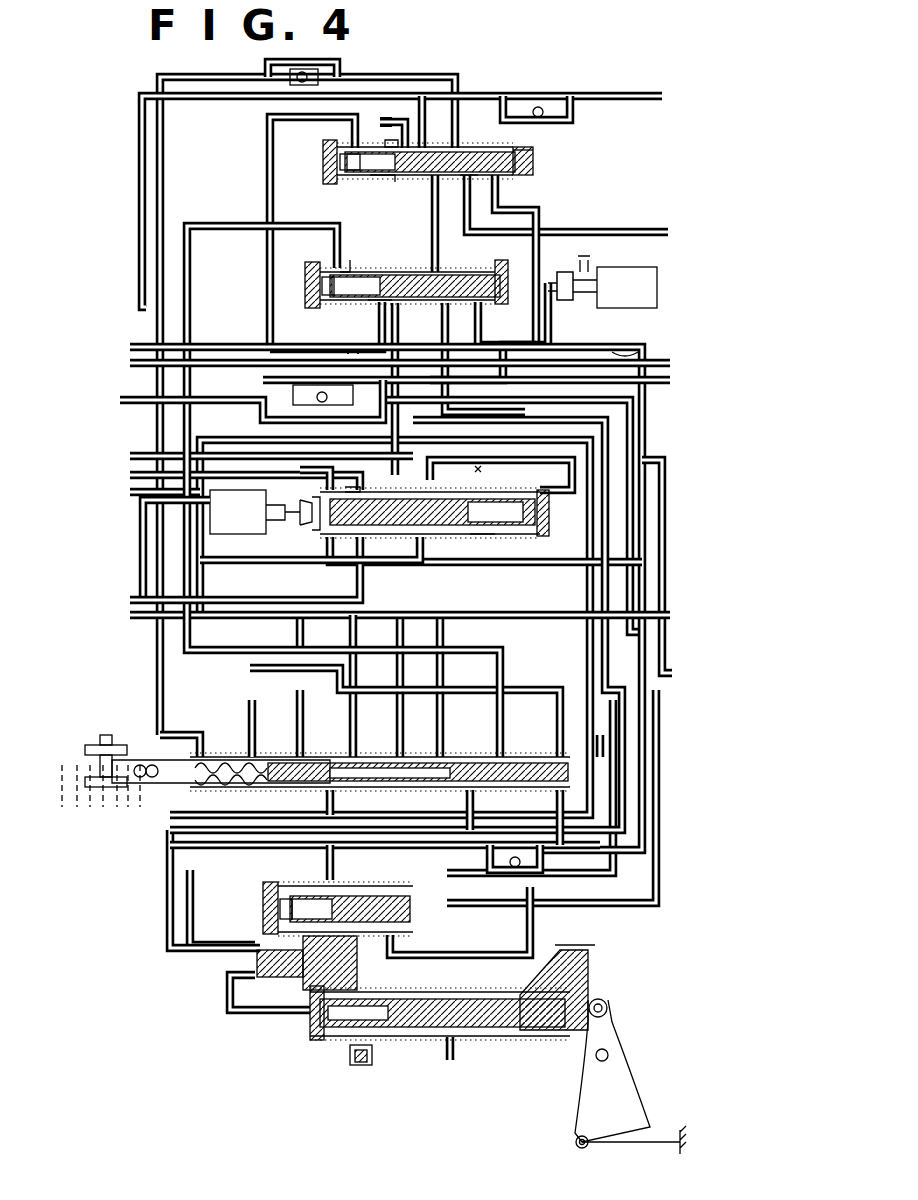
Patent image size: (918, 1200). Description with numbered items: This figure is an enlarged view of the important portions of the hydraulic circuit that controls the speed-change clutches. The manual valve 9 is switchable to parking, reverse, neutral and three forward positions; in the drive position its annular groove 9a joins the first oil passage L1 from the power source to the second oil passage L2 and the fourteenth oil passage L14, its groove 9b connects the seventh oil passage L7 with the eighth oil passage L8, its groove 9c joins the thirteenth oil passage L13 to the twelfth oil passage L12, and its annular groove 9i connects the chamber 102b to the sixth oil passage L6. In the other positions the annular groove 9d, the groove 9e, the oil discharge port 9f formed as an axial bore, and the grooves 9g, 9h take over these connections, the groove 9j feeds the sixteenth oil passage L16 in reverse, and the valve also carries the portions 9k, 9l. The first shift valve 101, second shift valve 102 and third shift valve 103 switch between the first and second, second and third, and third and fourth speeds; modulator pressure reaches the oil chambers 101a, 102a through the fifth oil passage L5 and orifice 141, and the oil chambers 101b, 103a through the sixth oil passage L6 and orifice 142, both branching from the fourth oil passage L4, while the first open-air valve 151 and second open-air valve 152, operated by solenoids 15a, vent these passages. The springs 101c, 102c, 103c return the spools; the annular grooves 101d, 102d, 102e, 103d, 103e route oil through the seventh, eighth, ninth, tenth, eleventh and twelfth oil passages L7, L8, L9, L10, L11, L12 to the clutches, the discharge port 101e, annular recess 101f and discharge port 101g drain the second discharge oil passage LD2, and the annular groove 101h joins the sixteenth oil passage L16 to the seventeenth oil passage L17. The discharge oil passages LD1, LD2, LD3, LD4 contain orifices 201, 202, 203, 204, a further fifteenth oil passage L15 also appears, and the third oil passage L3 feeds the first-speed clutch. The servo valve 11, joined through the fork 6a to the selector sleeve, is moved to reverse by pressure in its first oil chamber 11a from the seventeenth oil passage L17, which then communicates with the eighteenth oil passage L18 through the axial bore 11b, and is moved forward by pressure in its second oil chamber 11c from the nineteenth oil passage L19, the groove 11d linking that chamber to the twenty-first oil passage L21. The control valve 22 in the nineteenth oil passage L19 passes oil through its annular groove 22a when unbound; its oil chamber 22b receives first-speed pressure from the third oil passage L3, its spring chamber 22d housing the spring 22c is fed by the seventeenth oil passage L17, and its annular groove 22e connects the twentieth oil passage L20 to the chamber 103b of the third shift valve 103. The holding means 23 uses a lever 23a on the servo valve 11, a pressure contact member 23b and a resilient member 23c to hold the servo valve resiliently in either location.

The manual valve 9 is at (150, 760).
The annular groove 9a is at (360, 789).
The groove 9b is at (505, 752).
The groove 9c is at (300, 742).
The annular groove 9d is at (490, 792).
The groove 9e is at (412, 790).
The oil discharge port 9f is at (570, 772).
The groove 9g is at (418, 757).
The groove 9h is at (520, 759).
The annular groove 9i is at (545, 792).
The groove 9j is at (340, 789).
The manual valve port 9k is at (380, 757).
The manual valve port 9l is at (268, 789).
The servo valve 11 is at (485, 1042).
The first oil chamber 11a is at (312, 1037).
The axial bore 11b is at (400, 1042).
The second oil chamber 11c is at (358, 1068).
The groove 11d is at (420, 1042).
The fork 6a is at (588, 970).
The solenoid 15a is at (657, 290).
The first open-air valve 151 is at (580, 282).
The second open-air valve 152 is at (285, 524).
The control valve 22 is at (410, 912).
The annular groove 22a is at (400, 937).
The right end oil chamber 22b is at (415, 927).
The spring 22c is at (280, 910).
The spring chamber 22d is at (290, 927).
The annular groove 22e is at (320, 947).
The holding means 23 is at (628, 1084).
The lever 23a is at (585, 1102).
The pressure contact member 23b is at (578, 1140).
The resilient member 23c is at (664, 1142).
The first shift valve 101 is at (546, 498).
The right end oil chamber 101a is at (530, 540).
The left-end oil chamber 101b is at (143, 502).
The right-end spring 101c is at (560, 522).
The annular groove 101d is at (478, 537).
The oil discharge port 101e is at (472, 482).
The annular recess 101f is at (320, 532).
The oil discharge port 101g is at (385, 490).
The annular groove 101h is at (425, 562).
The second shift valve 102 is at (464, 320).
The right end oil chamber 102a is at (485, 307).
The left chamber 102b is at (330, 284).
The left-end spring 102c is at (330, 302).
The annular groove 102d is at (377, 306).
The annular groove 102e is at (408, 268).
The third shift valve 103 is at (498, 142).
The right-end oil chamber 103a is at (522, 194).
The left end oil chamber 103b is at (340, 164).
The left-end spring 103c is at (390, 142).
The annular groove 103d is at (385, 176).
The annular groove 103e is at (465, 178).
The orifice 141 is at (643, 352).
The orifice 142 is at (420, 564).
The orifice 201 is at (345, 350).
The orifice 202 is at (392, 120).
The orifice 203 is at (548, 234).
The orifice 204 is at (440, 477).
The No. 1 oil passage L1 is at (330, 864).
The No. 2 oil passage L2 is at (353, 620).
The No. 3 oil passage L3 is at (645, 432).
The No. 4 oil passage L4 is at (550, 612).
The No. 5 oil passage L5 is at (583, 368).
The No. 6 oil passage L6 is at (540, 207).
The No. 7 oil passage L7 is at (590, 592).
The No. 8 oil passage L8 is at (398, 347).
The No. 9 oil passage L9 is at (200, 407).
The No. 10 oil passage L10 is at (440, 217).
The No. 11 oil passage L11 is at (594, 95).
The No. 12 oil passage L12 is at (455, 82).
The No. 13 oil passage L13 is at (290, 670).
The No. 14 oil passage L14 is at (535, 897).
The oil line L15 is at (200, 228).
The No. 16 oil passage L16 is at (210, 619).
The No. 17 oil passage L17 is at (145, 456).
The No. 18 oil passage L18 is at (315, 750).
The No. 19 oil passage L19 is at (255, 977).
The No. 20 oil passage L20 is at (268, 132).
The No. 21 oil passage L21 is at (450, 1040).
The first discharge oil passage LD1 is at (620, 387).
The second discharge oil passage LD2 is at (140, 270).
The third discharge oil passage LD3 is at (652, 231).
The fourth discharge oil passage LD4 is at (520, 362).